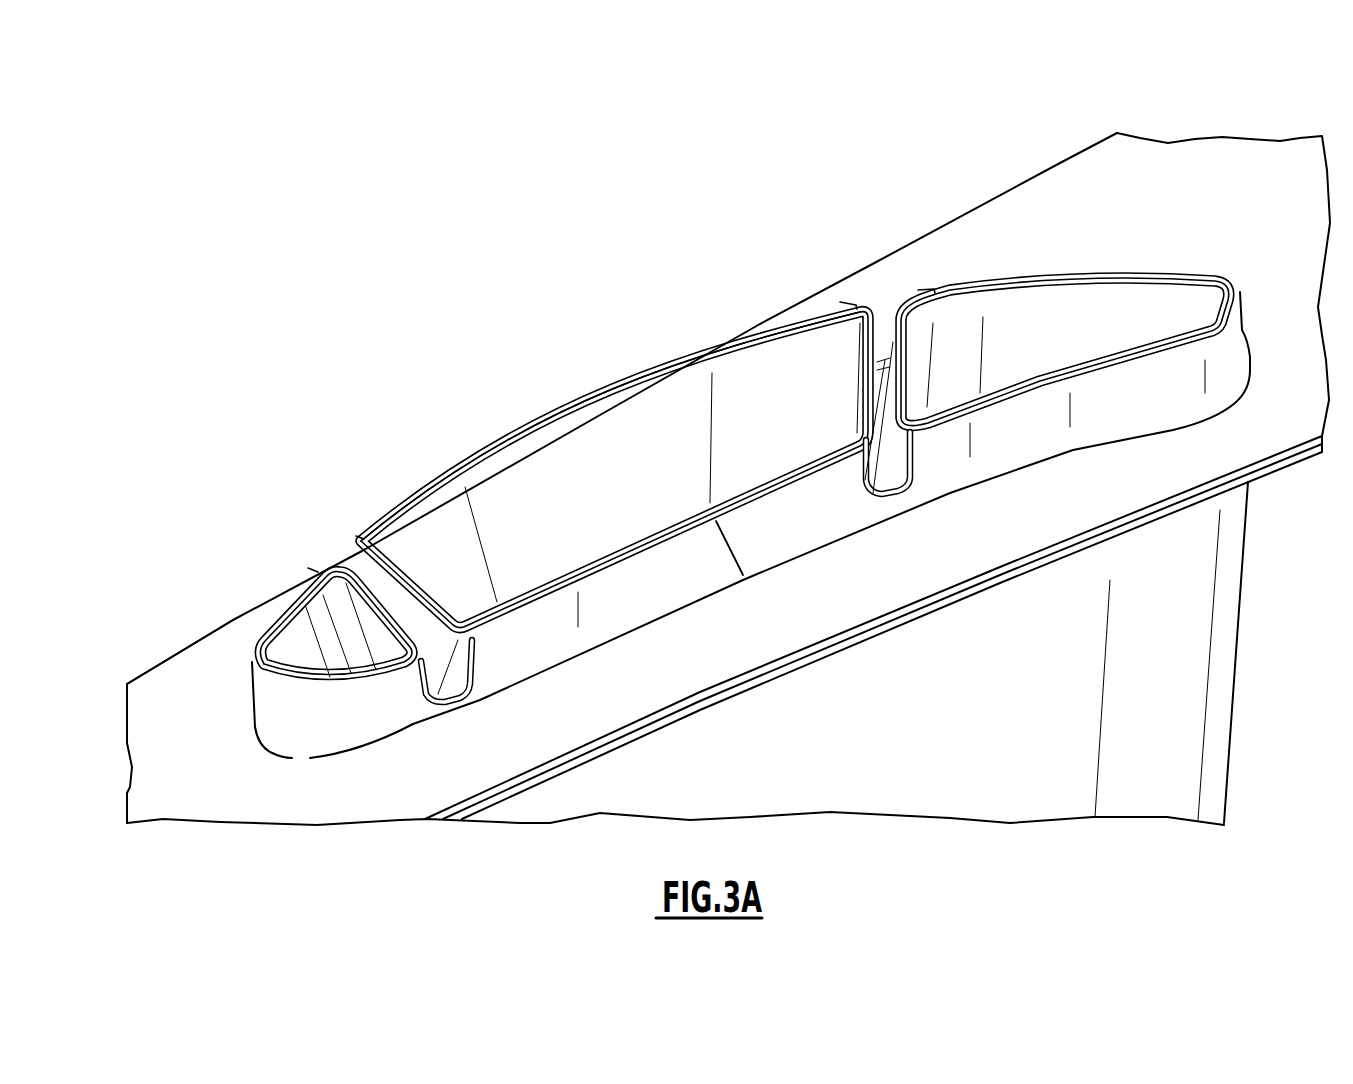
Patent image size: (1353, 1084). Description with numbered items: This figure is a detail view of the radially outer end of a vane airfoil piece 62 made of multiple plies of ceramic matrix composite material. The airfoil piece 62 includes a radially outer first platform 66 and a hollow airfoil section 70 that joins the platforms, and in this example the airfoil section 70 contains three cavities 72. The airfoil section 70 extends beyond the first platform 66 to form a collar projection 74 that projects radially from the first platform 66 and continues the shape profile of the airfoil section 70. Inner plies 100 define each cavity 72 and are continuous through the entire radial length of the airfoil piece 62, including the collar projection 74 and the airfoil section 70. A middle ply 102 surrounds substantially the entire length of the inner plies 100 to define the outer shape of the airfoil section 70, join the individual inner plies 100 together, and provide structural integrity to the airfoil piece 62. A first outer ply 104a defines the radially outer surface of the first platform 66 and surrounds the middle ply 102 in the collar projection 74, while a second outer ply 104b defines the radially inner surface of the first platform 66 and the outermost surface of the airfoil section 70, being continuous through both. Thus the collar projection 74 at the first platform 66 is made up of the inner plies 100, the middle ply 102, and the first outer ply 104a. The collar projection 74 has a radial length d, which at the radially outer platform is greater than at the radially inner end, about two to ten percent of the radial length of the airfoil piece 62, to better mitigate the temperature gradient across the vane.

The airfoil piece 62 is at (306, 394).
The first platform 66 is at (1028, 181).
The airfoil section 70 is at (1260, 693).
The cavity 72 is at (915, 370).
The collar projection 74 is at (558, 375).
The inner plies 100 is at (967, 357).
The middle ply 102 is at (697, 348).
The first outer ply 104a is at (1225, 170).
The second outer ply 104b is at (1222, 612).
The length of collar projection d is at (735, 548).